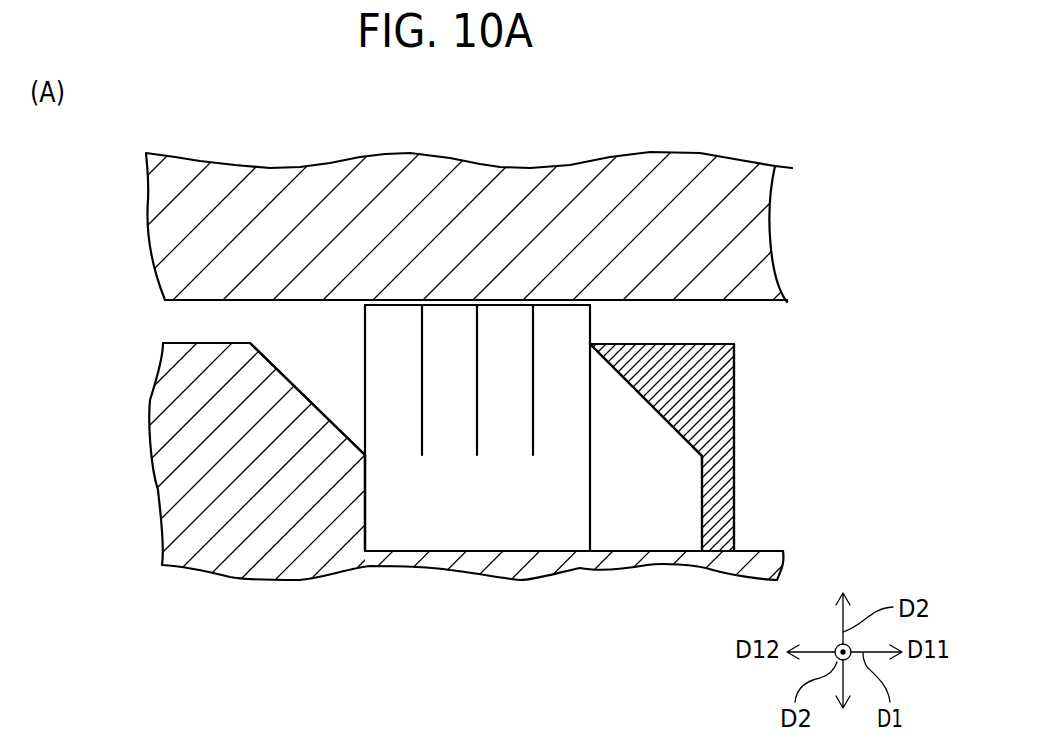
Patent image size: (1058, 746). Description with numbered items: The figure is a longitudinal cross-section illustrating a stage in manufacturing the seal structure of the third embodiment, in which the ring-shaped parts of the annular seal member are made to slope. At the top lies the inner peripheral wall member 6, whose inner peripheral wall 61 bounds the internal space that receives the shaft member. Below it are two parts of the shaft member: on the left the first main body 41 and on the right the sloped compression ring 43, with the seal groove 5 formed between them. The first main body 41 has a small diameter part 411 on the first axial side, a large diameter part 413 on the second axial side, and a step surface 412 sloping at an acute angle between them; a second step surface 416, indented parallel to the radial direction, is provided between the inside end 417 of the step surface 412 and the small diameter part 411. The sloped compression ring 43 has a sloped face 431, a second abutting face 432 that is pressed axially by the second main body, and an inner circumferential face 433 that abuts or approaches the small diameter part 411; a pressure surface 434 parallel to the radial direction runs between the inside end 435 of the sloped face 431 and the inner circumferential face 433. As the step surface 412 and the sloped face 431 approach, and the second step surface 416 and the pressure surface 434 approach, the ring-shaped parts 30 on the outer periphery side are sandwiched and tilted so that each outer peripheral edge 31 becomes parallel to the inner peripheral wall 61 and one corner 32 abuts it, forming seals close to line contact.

The inner peripheral wall member 6 is at (278, 177).
The inner peripheral wall 61 is at (698, 300).
The seal groove 5 is at (598, 538).
The ring-shaped part 30 is at (397, 333).
The outer peripheral edge 31 is at (383, 302).
The corner 32 is at (592, 300).
The first main body 41 is at (149, 461).
The small diameter part 411 is at (688, 551).
The step surface 412 is at (278, 366).
The large diameter part 413 is at (197, 343).
The second step surface 416 is at (367, 508).
The inside end 417 is at (365, 455).
The sloped compression ring 43 is at (738, 368).
The sloped face 431 is at (676, 428).
The second abutting face 432 is at (737, 405).
The inner circumferential face 433 is at (743, 576).
The pressure surface 434 is at (702, 508).
The inside end 435 is at (702, 456).